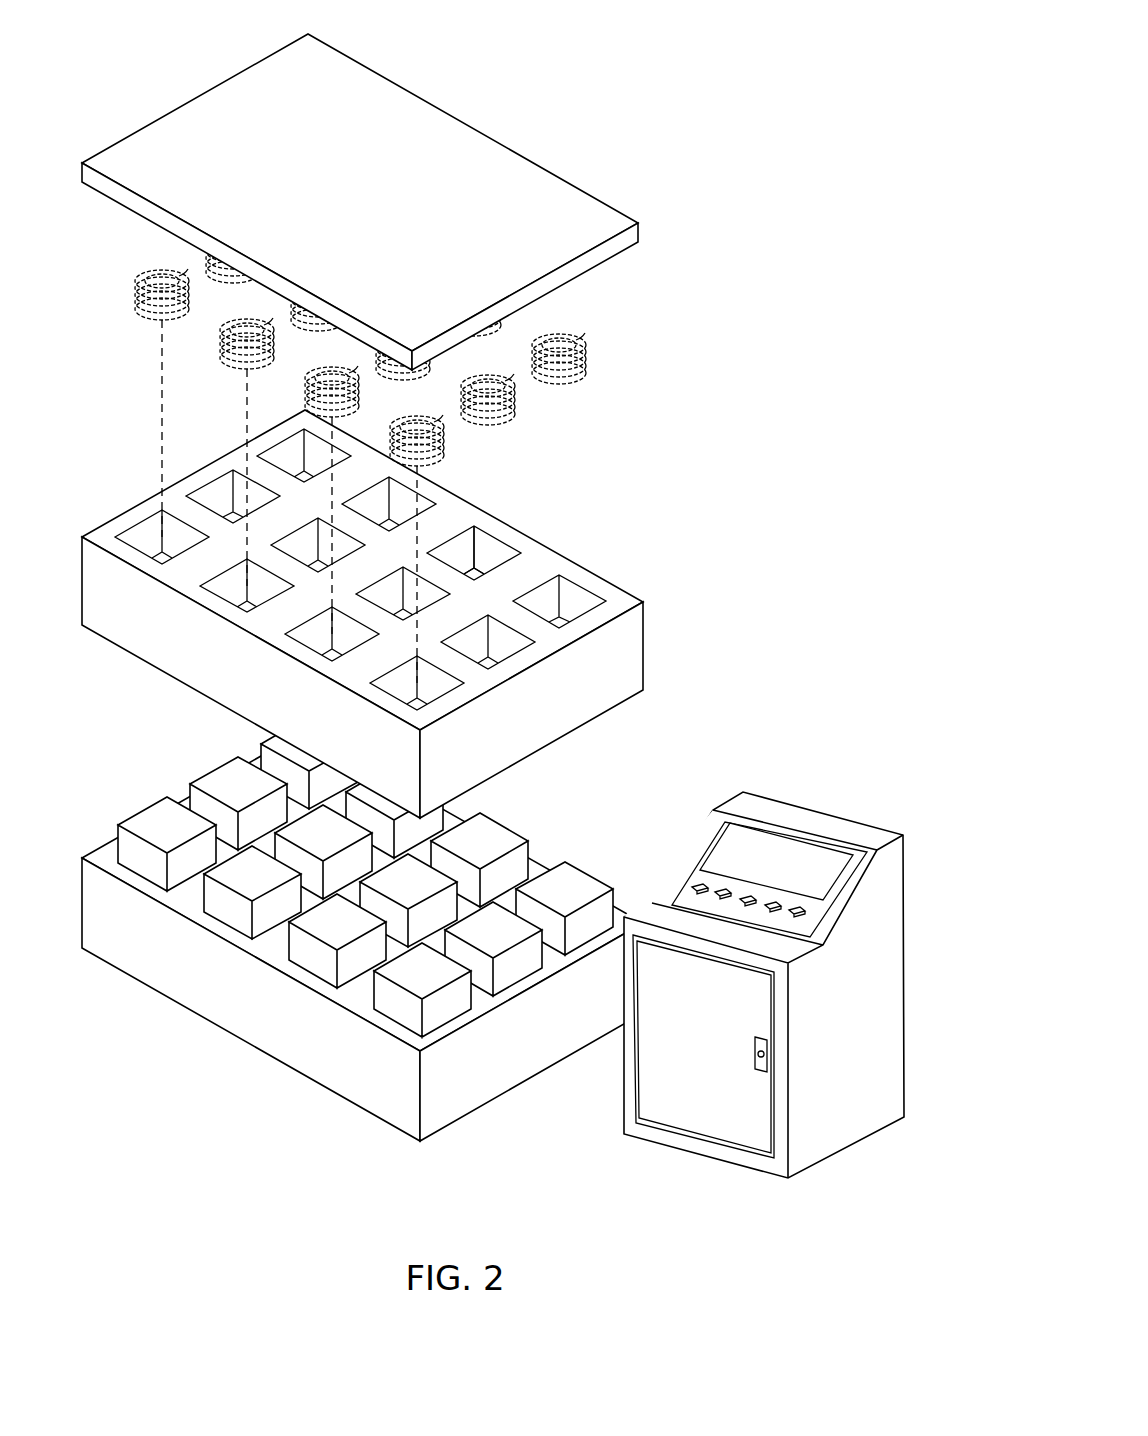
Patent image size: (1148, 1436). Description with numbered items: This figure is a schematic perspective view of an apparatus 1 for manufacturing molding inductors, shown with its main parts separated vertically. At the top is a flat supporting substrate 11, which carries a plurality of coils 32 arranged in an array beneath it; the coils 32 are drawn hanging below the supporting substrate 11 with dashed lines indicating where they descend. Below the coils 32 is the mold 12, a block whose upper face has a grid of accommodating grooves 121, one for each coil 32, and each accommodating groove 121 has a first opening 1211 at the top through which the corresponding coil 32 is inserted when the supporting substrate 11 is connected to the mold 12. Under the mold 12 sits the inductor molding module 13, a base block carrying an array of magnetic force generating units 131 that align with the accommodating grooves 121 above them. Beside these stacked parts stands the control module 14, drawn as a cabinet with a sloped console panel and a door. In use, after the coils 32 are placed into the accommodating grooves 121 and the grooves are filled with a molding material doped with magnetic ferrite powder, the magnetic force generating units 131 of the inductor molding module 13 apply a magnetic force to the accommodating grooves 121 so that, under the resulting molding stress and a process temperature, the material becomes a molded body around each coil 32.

The apparatus for manufacturing molding inductor 1 is at (751, 86).
The supporting substrate 11 is at (614, 213).
The mold 12 is at (623, 699).
The accommodating groove 121 is at (465, 526).
The first opening 1211 is at (500, 545).
The inductor molding module 13 is at (226, 1024).
The magnetic force generating unit 131 is at (556, 882).
The control module 14 is at (625, 1091).
The coil 32 is at (514, 405).